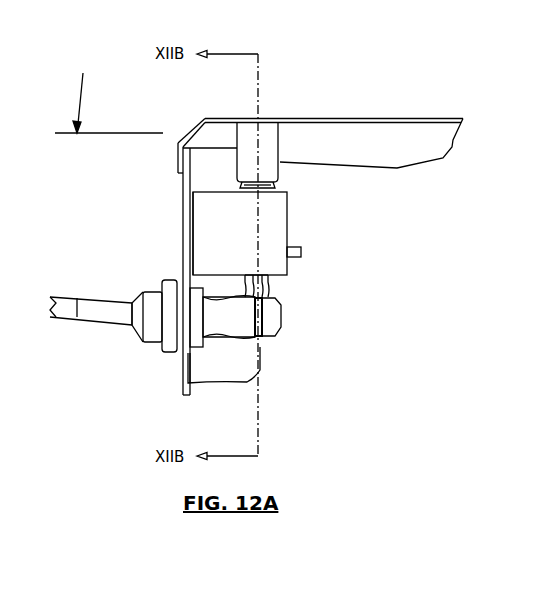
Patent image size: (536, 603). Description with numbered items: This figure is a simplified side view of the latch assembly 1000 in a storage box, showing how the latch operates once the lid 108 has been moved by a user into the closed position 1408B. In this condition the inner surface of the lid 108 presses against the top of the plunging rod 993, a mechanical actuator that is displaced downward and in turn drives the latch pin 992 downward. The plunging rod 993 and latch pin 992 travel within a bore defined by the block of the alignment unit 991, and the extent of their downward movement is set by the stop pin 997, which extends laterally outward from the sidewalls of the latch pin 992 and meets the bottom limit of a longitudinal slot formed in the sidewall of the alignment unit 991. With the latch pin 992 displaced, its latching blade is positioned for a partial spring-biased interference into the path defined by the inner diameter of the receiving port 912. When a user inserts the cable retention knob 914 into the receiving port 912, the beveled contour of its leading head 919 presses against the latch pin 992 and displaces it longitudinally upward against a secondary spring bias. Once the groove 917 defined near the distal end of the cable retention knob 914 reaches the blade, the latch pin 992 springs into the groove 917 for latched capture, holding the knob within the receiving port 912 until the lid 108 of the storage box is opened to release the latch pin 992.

The lid 108 is at (377, 119).
The closed position 1408B is at (88, 134).
The plunging rod 993 is at (280, 148).
The latch assembly 1000 is at (320, 199).
The alignment unit 991 is at (240, 233).
The stop pin 997 is at (302, 252).
The latch pin 992 is at (286, 284).
The cable retention knob 914 is at (229, 317).
The groove 917 is at (260, 344).
The leading head 919 is at (283, 332).
The receiving port 912 is at (197, 348).